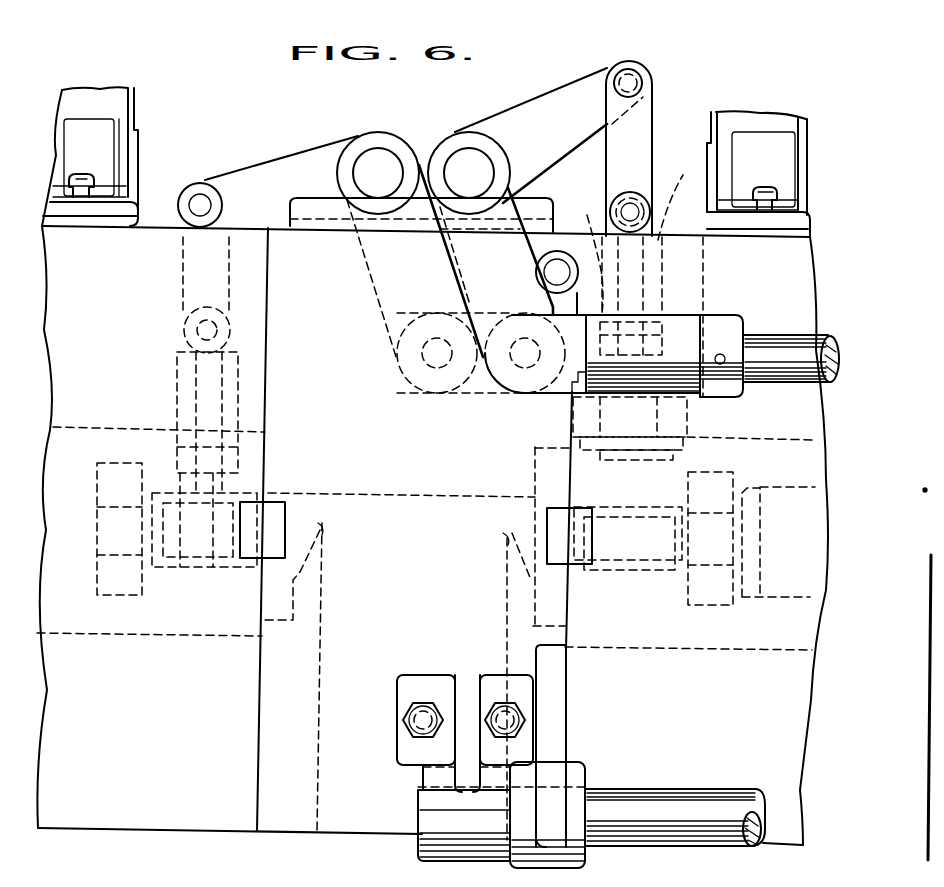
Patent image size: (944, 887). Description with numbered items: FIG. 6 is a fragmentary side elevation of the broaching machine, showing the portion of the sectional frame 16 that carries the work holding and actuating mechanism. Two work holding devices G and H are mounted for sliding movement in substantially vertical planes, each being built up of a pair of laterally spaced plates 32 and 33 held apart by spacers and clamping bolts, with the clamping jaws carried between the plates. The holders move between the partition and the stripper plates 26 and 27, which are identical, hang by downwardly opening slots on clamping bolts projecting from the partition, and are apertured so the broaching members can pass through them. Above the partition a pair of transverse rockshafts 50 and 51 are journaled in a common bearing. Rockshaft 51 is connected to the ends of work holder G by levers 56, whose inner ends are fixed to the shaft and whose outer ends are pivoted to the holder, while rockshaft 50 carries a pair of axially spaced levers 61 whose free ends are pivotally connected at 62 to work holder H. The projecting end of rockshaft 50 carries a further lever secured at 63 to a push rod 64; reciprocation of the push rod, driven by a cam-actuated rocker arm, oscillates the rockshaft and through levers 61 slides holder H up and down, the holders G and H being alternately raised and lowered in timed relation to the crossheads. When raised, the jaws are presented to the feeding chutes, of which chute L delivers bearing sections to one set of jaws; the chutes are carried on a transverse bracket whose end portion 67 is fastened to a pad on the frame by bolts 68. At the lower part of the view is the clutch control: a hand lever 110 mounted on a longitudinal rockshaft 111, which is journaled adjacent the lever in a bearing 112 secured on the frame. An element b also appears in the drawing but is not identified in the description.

The frame 16 is at (785, 832).
The stripper plate 26 is at (117, 468).
The stripper plate 27 is at (710, 475).
The plate 32 is at (657, 265).
The plate 33 is at (233, 406).
The rockshaft 50 is at (465, 160).
The rockshaft 51 is at (380, 162).
The lever 56 is at (267, 180).
The lever 61 is at (583, 80).
The pivotal connection 62 is at (468, 270).
The connection 63 is at (680, 334).
The push rod 64 is at (768, 347).
The end portion of bracket member 67 is at (112, 207).
The bolt 68 is at (93, 187).
The lever 110 is at (550, 700).
The rockshaft 111 is at (683, 828).
The bearing 112 is at (428, 862).
The work holding device G is at (228, 390).
The work holding device H is at (674, 201).
The chute L is at (732, 120).
The stop b is at (648, 580).